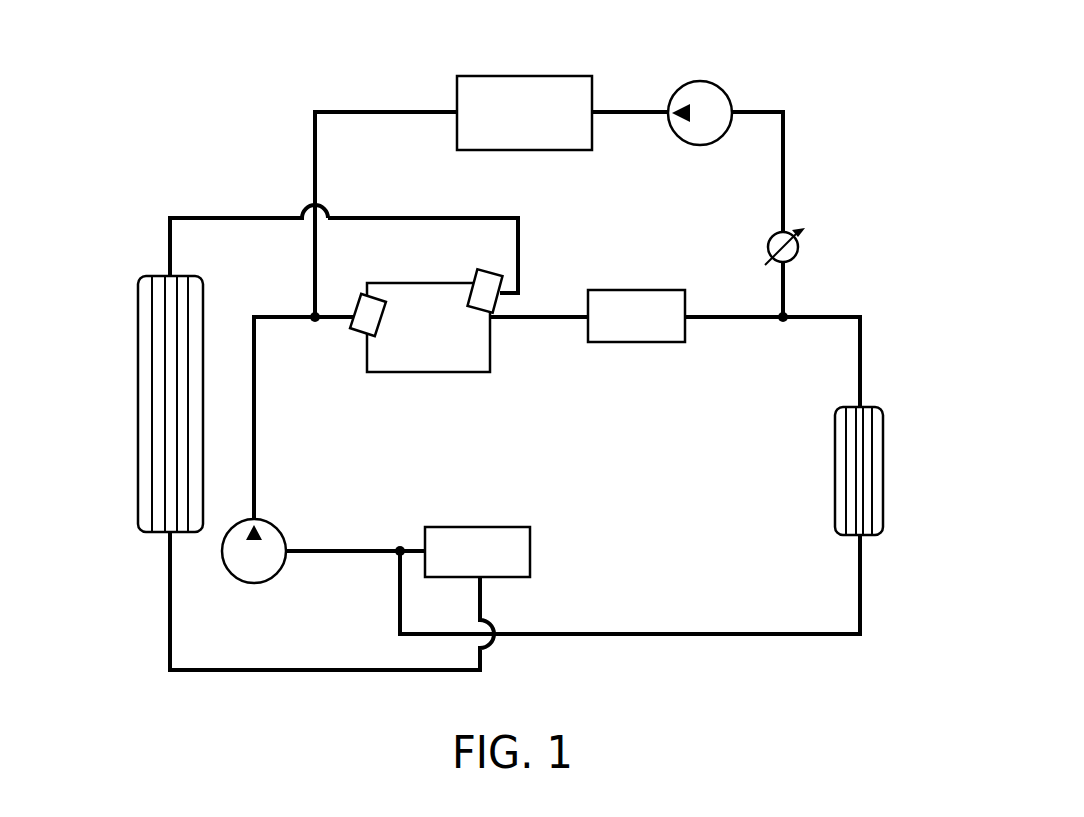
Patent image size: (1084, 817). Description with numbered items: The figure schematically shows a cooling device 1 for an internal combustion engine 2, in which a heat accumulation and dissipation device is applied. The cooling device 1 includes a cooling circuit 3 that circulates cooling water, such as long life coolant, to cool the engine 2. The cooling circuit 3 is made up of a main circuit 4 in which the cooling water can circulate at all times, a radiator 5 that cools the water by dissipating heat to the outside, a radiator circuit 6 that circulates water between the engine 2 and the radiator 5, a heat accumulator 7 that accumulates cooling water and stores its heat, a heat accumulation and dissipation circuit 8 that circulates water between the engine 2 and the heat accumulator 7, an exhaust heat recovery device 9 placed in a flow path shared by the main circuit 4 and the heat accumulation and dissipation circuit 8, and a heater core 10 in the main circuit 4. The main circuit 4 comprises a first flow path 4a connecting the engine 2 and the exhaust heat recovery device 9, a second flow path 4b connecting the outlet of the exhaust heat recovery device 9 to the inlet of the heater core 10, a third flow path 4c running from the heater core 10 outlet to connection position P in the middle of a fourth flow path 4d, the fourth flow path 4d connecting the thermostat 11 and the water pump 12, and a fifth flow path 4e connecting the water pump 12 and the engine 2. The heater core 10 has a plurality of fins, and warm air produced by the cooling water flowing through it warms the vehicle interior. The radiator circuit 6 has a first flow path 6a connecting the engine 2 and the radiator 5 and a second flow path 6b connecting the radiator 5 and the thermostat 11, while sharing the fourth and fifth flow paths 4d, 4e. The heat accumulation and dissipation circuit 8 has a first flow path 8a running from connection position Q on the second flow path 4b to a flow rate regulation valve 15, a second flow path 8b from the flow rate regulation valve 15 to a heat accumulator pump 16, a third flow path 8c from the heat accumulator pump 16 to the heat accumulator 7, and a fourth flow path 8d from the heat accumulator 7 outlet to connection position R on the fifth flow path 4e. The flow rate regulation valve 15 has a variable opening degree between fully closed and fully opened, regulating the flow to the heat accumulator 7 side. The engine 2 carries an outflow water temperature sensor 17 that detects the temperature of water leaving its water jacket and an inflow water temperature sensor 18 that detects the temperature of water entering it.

The cooling device 1 is at (210, 41).
The internal combustion engine 2 is at (428, 359).
The cooling circuit 3 is at (872, 93).
The main circuit 4 is at (580, 483).
The first flow path 4a is at (451, 356).
The second flow path 4b is at (772, 362).
The third flow path 4c is at (630, 624).
The fourth flow path 4d is at (355, 518).
The fifth flow path 4e is at (291, 418).
The radiator 5 is at (141, 404).
The radiator circuit 6 is at (302, 410).
The first flow path 6a is at (423, 224).
The second flow path 6b is at (290, 601).
The heat accumulator 7 is at (524, 86).
The heat accumulation and dissipation circuit 8 is at (586, 180).
The first flow path 8a is at (817, 287).
The second flow path 8b is at (794, 172).
The third flow path 8c is at (630, 81).
The fourth flow path 8d is at (386, 180).
The exhaust heat recovery device 9 is at (636, 288).
The heater core 10 is at (893, 471).
The thermostat 11 is at (477, 520).
The water pump 12 is at (258, 582).
The flow rate regulation valve 15 is at (759, 240).
The heat accumulator pump 16 is at (706, 87).
The outflow water temperature sensor 17 is at (464, 274).
The inflow water temperature sensor 18 is at (366, 289).
The connection position P is at (402, 510).
The connection position Q is at (768, 351).
The connection position R is at (291, 295).